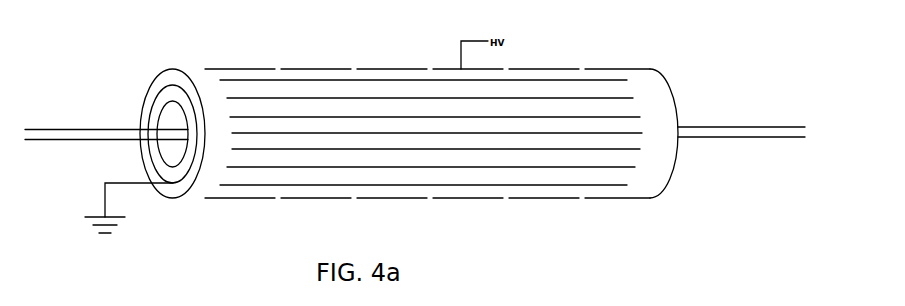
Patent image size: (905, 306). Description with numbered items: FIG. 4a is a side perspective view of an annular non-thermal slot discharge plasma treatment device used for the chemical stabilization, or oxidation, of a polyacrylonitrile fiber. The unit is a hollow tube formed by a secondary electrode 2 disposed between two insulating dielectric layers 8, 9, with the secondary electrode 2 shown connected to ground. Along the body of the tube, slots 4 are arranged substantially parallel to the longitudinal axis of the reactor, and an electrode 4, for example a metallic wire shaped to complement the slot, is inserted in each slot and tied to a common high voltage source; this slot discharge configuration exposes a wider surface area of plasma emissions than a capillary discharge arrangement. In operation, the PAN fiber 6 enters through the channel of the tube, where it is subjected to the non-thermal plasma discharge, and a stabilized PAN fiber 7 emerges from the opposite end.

The secondary electrode 2 is at (107, 205).
The slots 4 is at (353, 71).
The PAN fiber 6 is at (103, 130).
The stabilized PAN fiber 7 is at (717, 128).
The inner insulating dielectric layer 8 is at (153, 112).
The outer insulating dielectric layer 9 is at (167, 76).